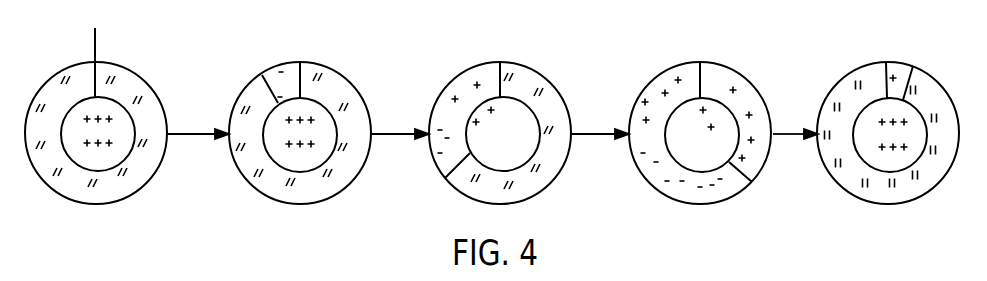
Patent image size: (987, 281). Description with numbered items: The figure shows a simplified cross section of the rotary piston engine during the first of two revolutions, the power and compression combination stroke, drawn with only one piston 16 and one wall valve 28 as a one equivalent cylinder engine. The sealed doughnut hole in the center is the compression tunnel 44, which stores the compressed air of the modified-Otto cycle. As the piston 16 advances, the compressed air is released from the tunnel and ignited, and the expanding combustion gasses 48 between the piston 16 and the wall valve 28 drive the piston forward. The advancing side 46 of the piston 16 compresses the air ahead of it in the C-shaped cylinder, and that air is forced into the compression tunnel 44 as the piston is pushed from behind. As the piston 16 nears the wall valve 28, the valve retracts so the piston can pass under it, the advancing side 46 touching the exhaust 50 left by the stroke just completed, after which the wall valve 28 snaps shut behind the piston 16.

The piston 16 is at (268, 72).
The wall valve 28 is at (96, 63).
The compression tunnel 44 is at (74, 147).
The advancing side of the piston 46 is at (94, 66).
The expanding combustion gasses 48 is at (482, 72).
The exhaust 50 is at (872, 78).